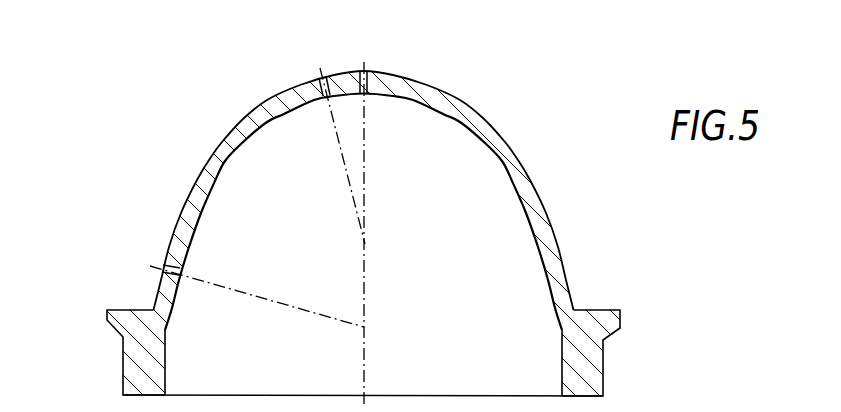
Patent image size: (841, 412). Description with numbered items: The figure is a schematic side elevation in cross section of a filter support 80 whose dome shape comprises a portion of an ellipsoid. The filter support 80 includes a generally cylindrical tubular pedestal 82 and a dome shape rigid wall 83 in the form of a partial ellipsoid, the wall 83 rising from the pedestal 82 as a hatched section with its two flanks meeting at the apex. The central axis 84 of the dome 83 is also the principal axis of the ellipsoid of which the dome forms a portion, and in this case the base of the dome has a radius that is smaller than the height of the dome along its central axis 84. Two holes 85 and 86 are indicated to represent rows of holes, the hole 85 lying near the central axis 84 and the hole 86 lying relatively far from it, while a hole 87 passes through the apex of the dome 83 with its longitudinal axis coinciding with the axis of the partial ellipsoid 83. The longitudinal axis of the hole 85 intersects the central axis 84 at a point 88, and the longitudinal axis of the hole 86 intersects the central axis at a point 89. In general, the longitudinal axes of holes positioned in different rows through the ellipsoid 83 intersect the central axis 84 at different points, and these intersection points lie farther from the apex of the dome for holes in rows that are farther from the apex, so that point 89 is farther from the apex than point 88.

The filter support 80 is at (467, 97).
The generally cylindrical tubular pedestal 82 is at (135, 364).
The dome shape rigid wall 83 is at (518, 165).
The central axis 84 is at (365, 133).
The hole 85 is at (314, 81).
The hole 86 is at (164, 265).
The apex hole 87 is at (377, 72).
The point of intersection 88 is at (365, 244).
The point of intersection 89 is at (364, 327).